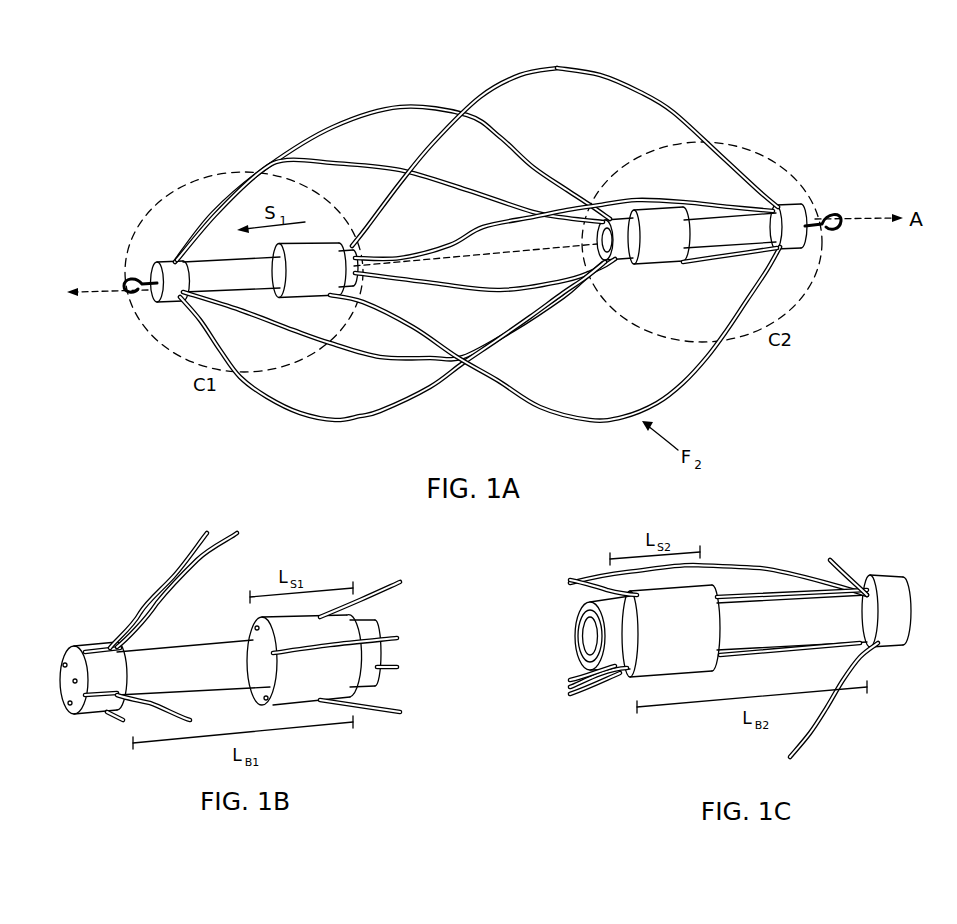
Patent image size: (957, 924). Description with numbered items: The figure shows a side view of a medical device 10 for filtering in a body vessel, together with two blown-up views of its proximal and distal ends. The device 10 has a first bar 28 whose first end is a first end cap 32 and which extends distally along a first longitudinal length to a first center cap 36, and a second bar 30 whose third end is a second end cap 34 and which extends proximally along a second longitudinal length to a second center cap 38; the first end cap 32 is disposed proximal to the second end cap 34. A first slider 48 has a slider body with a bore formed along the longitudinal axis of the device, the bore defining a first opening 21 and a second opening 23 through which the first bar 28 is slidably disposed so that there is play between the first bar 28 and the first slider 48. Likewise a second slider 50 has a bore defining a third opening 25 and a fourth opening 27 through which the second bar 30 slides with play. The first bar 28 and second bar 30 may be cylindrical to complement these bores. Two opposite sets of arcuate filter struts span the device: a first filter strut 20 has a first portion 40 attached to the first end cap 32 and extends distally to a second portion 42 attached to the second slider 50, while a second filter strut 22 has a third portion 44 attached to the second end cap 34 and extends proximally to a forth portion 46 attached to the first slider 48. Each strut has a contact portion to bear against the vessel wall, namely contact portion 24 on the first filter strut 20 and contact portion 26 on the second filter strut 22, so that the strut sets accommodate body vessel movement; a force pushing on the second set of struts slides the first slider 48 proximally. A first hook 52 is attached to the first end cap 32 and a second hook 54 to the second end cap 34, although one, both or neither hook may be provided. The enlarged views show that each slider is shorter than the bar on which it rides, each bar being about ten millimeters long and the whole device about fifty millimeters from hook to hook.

The device 10 is at (110, 86).
The first filter strut 20 is at (287, 157).
The first opening 21 is at (274, 298).
The second filter strut 22 is at (674, 112).
The second opening 23 is at (363, 294).
The contact portion 24 is at (360, 106).
The third opening 25 is at (598, 288).
The contact portion 26 is at (558, 67).
The fourth opening 27 is at (681, 262).
The first bar 28 is at (213, 290).
The second bar 30 is at (713, 232).
The first end cap 32 is at (143, 293).
The second end cap 34 is at (806, 240).
The first center cap 36 is at (350, 247).
The second center cap 38 is at (617, 228).
The first portion 40 is at (158, 262).
The second portion 42 is at (670, 203).
The third portion 44 is at (782, 203).
The forth portion 46 is at (308, 240).
The first slider 48 is at (303, 289).
The second slider 50 is at (658, 242).
The first hook 52 is at (123, 284).
The second hook 54 is at (833, 213).